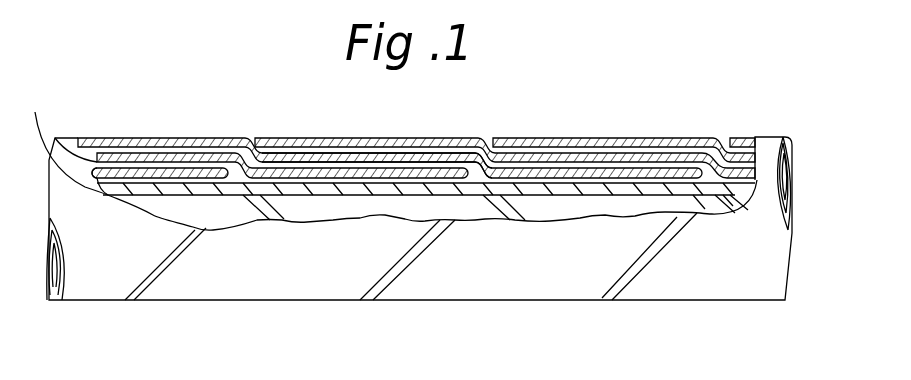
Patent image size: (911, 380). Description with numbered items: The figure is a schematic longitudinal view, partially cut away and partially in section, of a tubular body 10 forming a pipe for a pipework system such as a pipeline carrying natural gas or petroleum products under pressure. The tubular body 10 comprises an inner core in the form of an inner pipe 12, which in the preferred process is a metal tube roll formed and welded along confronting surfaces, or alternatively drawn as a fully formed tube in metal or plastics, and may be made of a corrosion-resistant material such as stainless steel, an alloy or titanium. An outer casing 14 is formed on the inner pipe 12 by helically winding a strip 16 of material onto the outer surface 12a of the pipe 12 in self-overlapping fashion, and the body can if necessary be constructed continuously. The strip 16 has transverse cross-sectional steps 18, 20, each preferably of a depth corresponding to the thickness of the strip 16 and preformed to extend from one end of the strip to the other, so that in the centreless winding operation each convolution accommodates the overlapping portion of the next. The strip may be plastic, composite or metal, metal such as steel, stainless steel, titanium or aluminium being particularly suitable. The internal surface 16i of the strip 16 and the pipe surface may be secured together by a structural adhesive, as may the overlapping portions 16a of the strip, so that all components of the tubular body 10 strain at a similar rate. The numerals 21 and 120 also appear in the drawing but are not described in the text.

The tubular body 10 is at (247, 302).
The inner pipe 12 is at (707, 185).
The outer surface of the pipe 12a is at (590, 183).
The outer casing 14 is at (663, 140).
The strip 16 is at (178, 137).
The overlapping portions of the strip 16a is at (377, 156).
The internal surface of the strip 16i is at (85, 187).
The transverse cross-sectional step 18 is at (245, 138).
The transverse cross-sectional step 20 is at (508, 142).
The strip end portion 21 is at (696, 149).
The bend of strip 120 is at (452, 168).